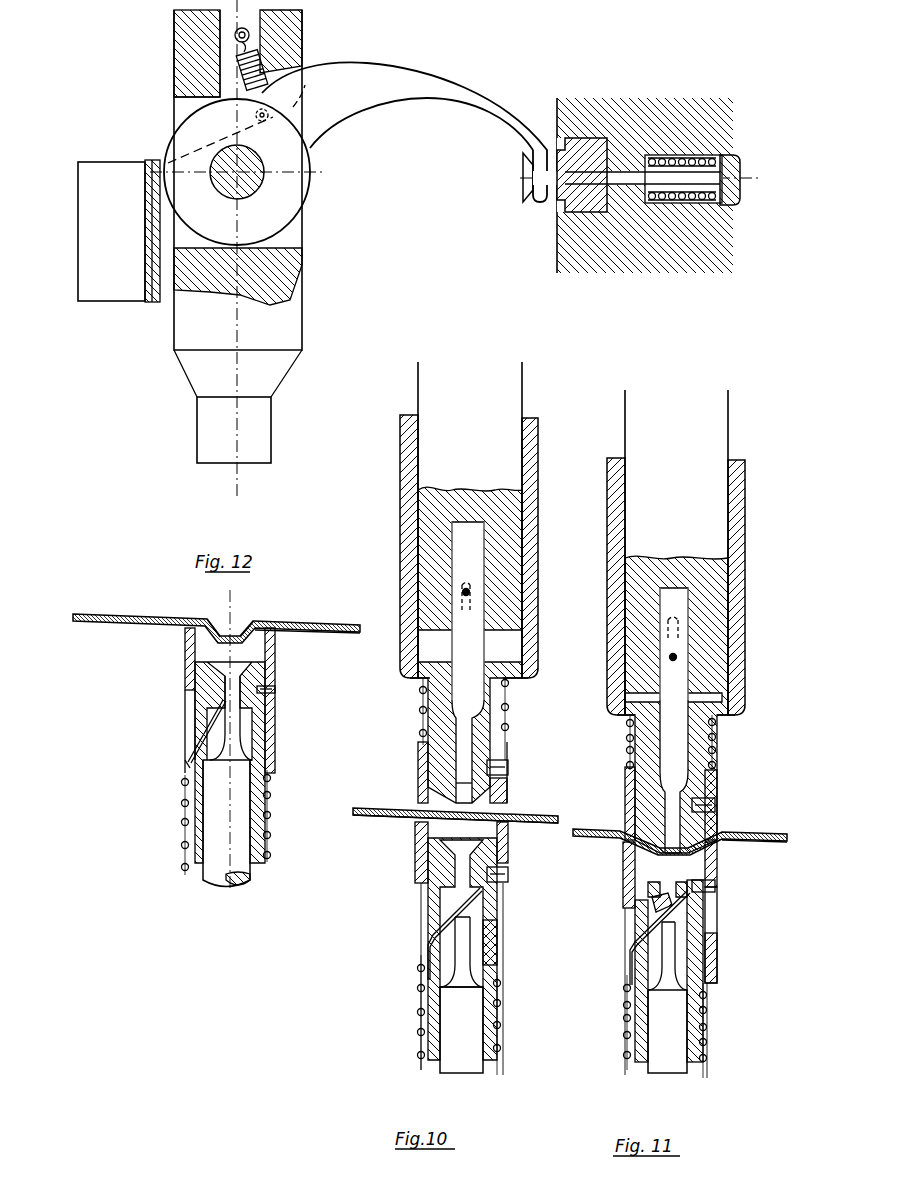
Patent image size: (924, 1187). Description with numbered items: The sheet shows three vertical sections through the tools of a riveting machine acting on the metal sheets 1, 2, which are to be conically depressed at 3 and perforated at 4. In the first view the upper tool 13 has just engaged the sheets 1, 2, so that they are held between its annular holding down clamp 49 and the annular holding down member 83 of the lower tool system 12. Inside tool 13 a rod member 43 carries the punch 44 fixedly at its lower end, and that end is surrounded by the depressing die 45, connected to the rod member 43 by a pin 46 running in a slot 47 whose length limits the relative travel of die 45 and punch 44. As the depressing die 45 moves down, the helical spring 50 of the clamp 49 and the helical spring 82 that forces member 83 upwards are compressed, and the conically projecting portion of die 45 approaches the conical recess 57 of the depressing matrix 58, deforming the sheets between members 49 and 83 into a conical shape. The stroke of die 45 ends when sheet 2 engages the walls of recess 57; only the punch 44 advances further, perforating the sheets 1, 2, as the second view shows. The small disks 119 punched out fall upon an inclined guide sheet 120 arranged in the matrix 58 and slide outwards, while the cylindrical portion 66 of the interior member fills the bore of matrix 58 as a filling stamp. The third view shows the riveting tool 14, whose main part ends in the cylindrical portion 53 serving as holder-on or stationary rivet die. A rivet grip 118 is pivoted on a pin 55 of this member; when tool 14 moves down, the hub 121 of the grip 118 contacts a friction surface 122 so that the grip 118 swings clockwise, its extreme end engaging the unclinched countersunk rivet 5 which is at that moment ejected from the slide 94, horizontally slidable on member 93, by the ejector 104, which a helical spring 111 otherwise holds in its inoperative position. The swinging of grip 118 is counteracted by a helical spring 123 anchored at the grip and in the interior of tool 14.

In FIG. 12, the metal sheet 1 is at (312, 620).
In FIG. 10, the metal sheet 1 is at (530, 813).
In FIG. 11, the metal sheet 1 is at (770, 831).
In FIG. 12, the metal sheet 2 is at (320, 633).
In FIG. 10, the metal sheet 2 is at (538, 822).
In FIG. 11, the metal sheet 2 is at (763, 839).
In FIG. 12, the conical depression 3 is at (243, 626).
In FIG. 12, the perforation 4 is at (221, 622).
In FIG. 12, the countersunk rivet 5 is at (524, 176).
In FIG. 10, the lower tool system 12 is at (410, 898).
In FIG. 11, the lower tool system 12 is at (722, 1020).
In FIG. 10, the upper tool 13 is at (527, 402).
In FIG. 11, the upper tool 13 is at (732, 450).
In FIG. 12, the riveting tool 14 is at (298, 335).
In FIG. 10, the rod member 43 is at (510, 532).
In FIG. 11, the rod member 43 is at (715, 528).
In FIG. 10, the punch 44 is at (466, 728).
In FIG. 11, the punch 44 is at (712, 787).
In FIG. 10, the depressing die 45 is at (499, 745).
In FIG. 11, the depressing die 45 is at (689, 823).
In FIG. 10, the pin 46 is at (470, 592).
In FIG. 11, the pin 46 is at (677, 660).
In FIG. 10, the slot 47 is at (472, 620).
In FIG. 11, the slot 47 is at (681, 630).
In FIG. 10, the annular holding down clamp 49 is at (422, 763).
In FIG. 11, the annular holding down clamp 49 is at (630, 802).
In FIG. 10, the helical spring 50 is at (420, 709).
In FIG. 11, the helical spring 50 is at (627, 739).
In FIG. 12, the cylindrical portion 53 is at (265, 439).
In FIG. 12, the pin 55 is at (262, 190).
In FIG. 10, the conical recess 57 is at (468, 843).
In FIG. 12, the depressing matrix 58 is at (262, 688).
In FIG. 10, the depressing matrix 58 is at (499, 938).
In FIG. 11, the depressing matrix 58 is at (710, 962).
In FIG. 12, the cylindrical portion 66 is at (233, 733).
In FIG. 10, the cylindrical portion 66 is at (462, 963).
In FIG. 11, the cylindrical portion 66 is at (665, 963).
In FIG. 12, the helical spring 82 is at (185, 822).
In FIG. 10, the helical spring 82 is at (418, 1012).
In FIG. 11, the helical spring 82 is at (625, 1018).
In FIG. 12, the annular holding down member 83 is at (185, 679).
In FIG. 10, the annular holding down member 83 is at (420, 852).
In FIG. 11, the annular holding down member 83 is at (628, 878).
In FIG. 12, the member 93 is at (641, 257).
In FIG. 12, the slide 94 is at (588, 150).
In FIG. 12, the ejector 104 is at (735, 176).
In FIG. 12, the helical spring 111 is at (670, 155).
In FIG. 12, the rivet grip 118 is at (403, 72).
In FIG. 11, the small disks 119 is at (672, 908).
In FIG. 12, the guide sheet 120 is at (205, 741).
In FIG. 10, the guide sheet 120 is at (430, 930).
In FIG. 11, the guide sheet 120 is at (633, 938).
In FIG. 12, the hub 121 is at (176, 160).
In FIG. 12, the friction surface 122 is at (150, 292).
In FIG. 12, the helical spring 123 is at (265, 68).